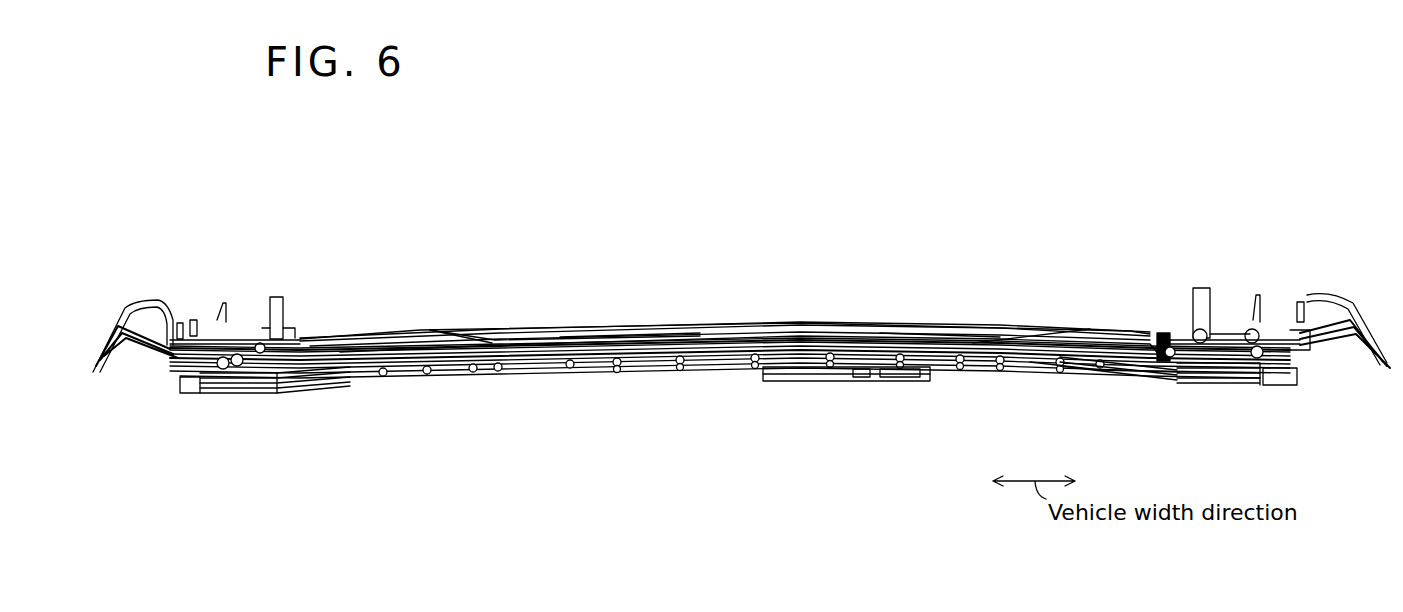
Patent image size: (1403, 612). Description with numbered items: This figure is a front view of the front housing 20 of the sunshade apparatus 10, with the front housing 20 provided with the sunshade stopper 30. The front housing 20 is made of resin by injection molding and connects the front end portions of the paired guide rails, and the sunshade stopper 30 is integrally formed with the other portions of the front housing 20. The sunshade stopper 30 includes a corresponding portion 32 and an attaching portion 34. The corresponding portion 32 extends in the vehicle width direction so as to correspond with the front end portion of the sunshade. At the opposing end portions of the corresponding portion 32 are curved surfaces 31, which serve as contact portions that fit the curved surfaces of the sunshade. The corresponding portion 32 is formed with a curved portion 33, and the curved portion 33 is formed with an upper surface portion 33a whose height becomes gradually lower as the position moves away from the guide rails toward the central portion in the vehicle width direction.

The sunshade apparatus 10 is at (904, 190).
The front housing 20 is at (1030, 333).
The sunshade stopper 30 is at (1083, 343).
The curved surface 31 is at (342, 345).
The corresponding portion 32 is at (980, 350).
The curved portion 33 is at (515, 350).
The upper surface portion 33a is at (495, 340).
The attaching portion 34 is at (1055, 366).